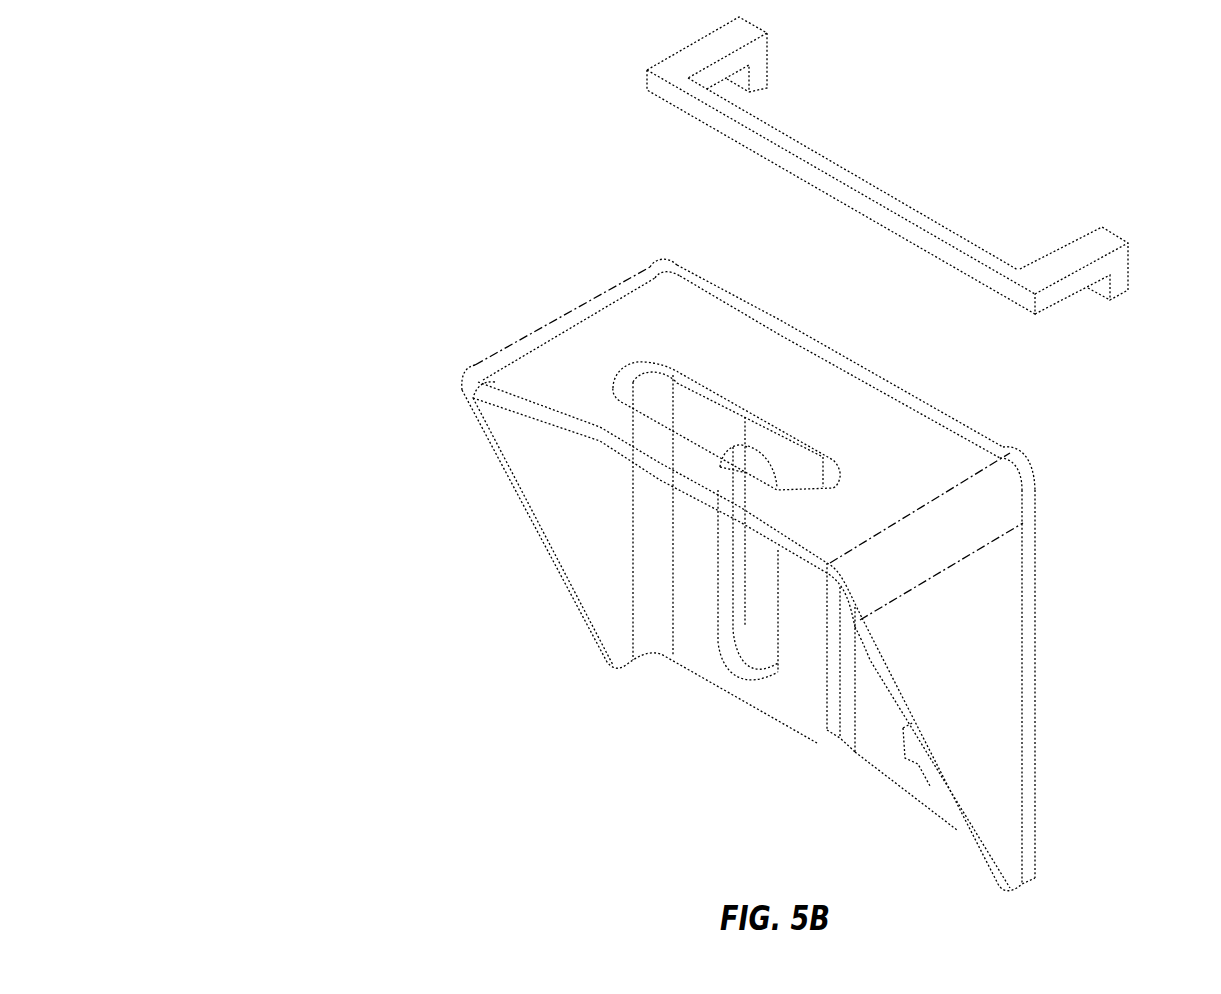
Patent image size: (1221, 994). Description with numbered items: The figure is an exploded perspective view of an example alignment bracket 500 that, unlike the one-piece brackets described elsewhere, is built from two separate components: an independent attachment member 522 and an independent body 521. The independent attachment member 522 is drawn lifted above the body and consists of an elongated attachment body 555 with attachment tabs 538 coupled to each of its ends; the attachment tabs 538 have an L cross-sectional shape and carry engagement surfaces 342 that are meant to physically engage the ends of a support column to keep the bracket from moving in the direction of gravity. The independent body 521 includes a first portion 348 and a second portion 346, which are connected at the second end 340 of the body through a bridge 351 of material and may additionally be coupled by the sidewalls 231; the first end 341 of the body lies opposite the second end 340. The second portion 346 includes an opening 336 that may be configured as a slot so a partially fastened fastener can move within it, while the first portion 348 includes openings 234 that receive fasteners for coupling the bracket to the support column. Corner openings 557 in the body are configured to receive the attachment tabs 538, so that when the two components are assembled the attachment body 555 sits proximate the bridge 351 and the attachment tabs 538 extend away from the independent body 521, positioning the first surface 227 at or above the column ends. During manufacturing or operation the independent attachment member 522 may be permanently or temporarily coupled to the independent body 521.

The alignment bracket 500 is at (92, 80).
The independent attachment member 522 is at (1090, 170).
The attachment body 555 is at (856, 190).
The attachment tabs 538 is at (757, 55).
The engagement surfaces 342 is at (735, 78).
The independent body 521 is at (1010, 590).
The first surface 227 is at (636, 330).
The second portion 346 is at (555, 373).
The corner openings 557 is at (658, 272).
The second end 340 is at (801, 337).
The bridge 351 is at (840, 367).
The sidewalls 231 is at (556, 513).
The opening 336 is at (660, 398).
The openings 234 is at (765, 627).
The first portion 348 is at (847, 700).
The first end 341 is at (842, 745).